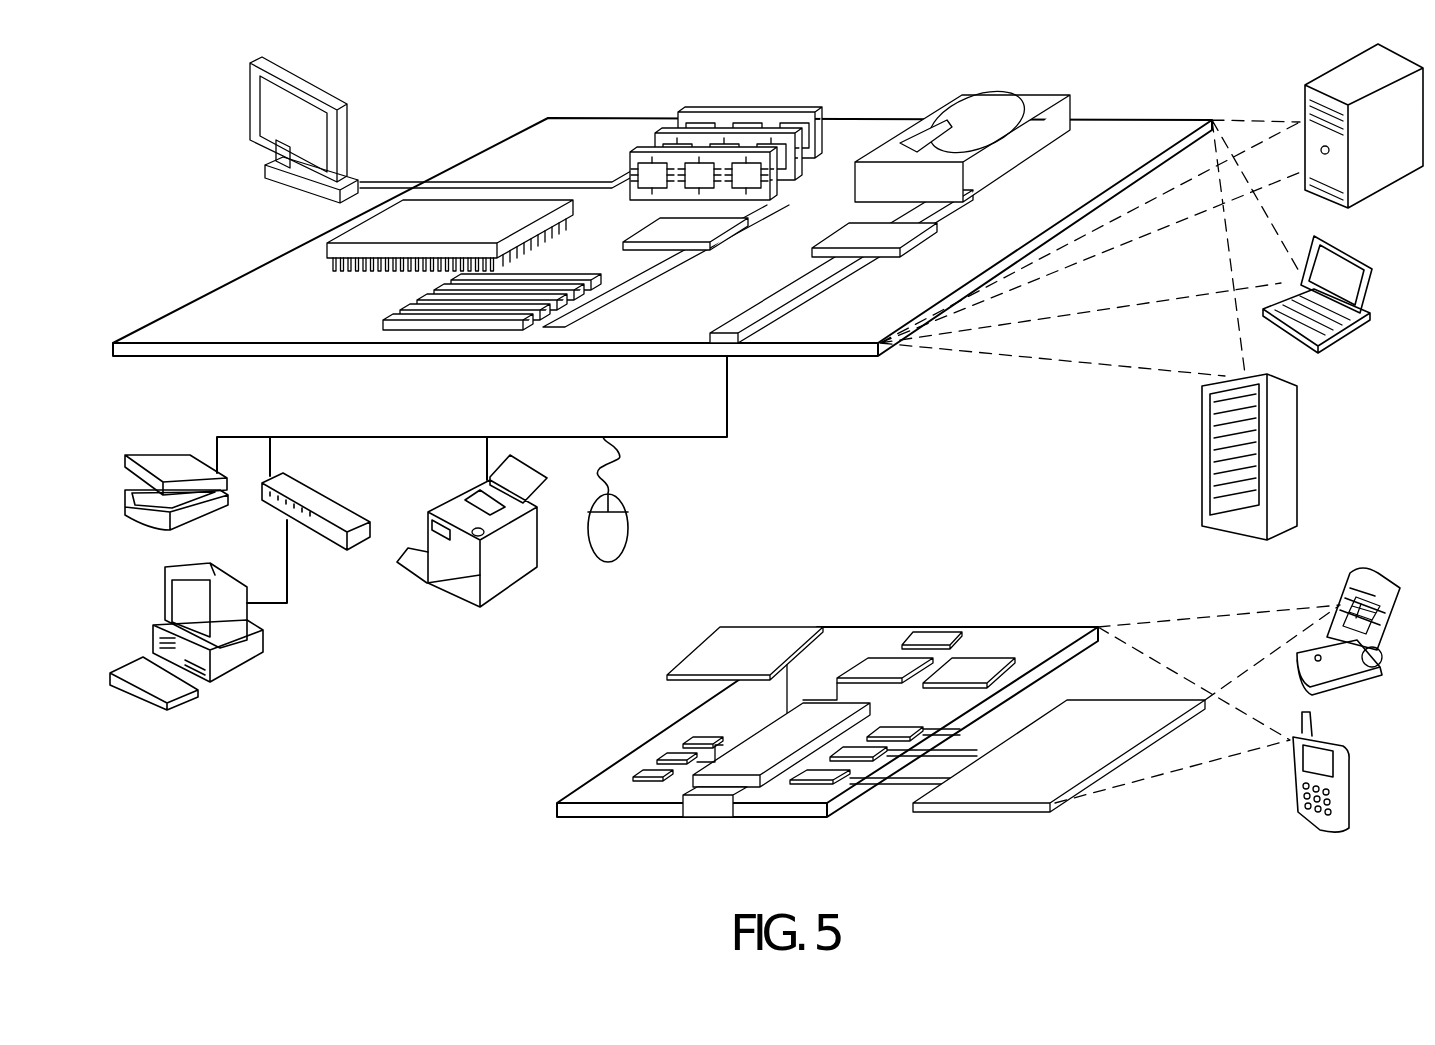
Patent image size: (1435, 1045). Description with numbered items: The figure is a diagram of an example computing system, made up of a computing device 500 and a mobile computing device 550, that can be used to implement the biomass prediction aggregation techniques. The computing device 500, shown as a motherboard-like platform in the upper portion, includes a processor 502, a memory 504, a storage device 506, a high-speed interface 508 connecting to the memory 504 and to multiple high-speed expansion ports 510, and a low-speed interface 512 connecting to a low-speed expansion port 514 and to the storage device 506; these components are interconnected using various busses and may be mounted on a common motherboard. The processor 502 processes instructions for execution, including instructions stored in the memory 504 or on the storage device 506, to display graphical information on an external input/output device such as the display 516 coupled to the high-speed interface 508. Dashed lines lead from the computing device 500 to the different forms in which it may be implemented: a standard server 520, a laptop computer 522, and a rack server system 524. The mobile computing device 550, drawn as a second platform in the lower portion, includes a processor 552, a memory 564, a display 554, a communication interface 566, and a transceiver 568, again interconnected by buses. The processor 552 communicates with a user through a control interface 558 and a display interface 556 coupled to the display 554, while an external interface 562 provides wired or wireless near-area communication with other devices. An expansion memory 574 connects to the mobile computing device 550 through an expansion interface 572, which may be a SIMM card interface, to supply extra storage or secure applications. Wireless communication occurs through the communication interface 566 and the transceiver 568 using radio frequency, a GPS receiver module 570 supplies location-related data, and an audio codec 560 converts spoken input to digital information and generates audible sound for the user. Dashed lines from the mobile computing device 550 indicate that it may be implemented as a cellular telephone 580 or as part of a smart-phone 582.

The computing device 500 is at (185, 87).
The processor 502 is at (330, 250).
The memory 504 is at (687, 110).
The storage device 506 is at (958, 95).
The high-speed interface 508 is at (657, 233).
The high-speed expansion ports 510 is at (412, 311).
The low-speed interface 512 is at (850, 233).
The low-speed expansion port 514 is at (737, 343).
The display 516 is at (313, 80).
The standard server 520 is at (1303, 99).
The laptop computer 522 is at (1342, 332).
The rack server system 524 is at (1202, 470).
The mobile computing device 550 is at (529, 773).
The processor 552 is at (755, 767).
The display 554 is at (1013, 788).
The display interface 556 is at (820, 780).
The control interface 558 is at (858, 757).
The audio codec 560 is at (893, 727).
The external interface 562 is at (717, 803).
The memory 564 is at (657, 758).
The communication interface 566 is at (885, 667).
The transceiver 568 is at (972, 667).
The GPS receiver module 570 is at (945, 630).
The expansion interface 572 is at (788, 642).
The expansion memory 574 is at (720, 640).
The cellular telephone 580 is at (1333, 543).
The smart-phone 582 is at (1293, 773).